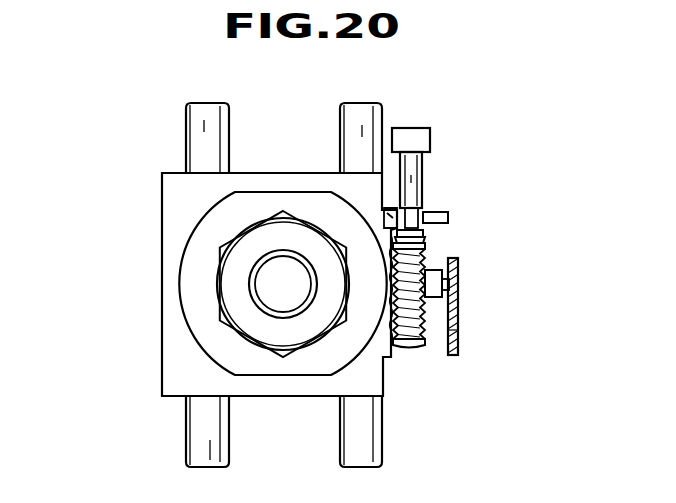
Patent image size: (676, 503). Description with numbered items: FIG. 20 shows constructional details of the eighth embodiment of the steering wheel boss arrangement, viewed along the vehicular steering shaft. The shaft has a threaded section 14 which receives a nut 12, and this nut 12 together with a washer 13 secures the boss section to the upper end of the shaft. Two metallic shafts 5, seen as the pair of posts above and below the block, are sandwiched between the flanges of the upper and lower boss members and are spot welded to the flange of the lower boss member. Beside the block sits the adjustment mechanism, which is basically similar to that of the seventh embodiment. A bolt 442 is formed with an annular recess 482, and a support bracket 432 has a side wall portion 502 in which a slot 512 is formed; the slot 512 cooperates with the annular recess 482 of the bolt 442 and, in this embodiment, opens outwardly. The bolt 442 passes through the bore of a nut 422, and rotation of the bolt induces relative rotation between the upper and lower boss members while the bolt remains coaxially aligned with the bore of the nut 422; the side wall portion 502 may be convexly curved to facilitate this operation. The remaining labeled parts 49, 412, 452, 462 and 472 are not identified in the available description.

The metallic shafts 5 is at (340, 138).
The nut 12 is at (221, 258).
The washer 13 is at (227, 233).
The threaded section 14 is at (263, 280).
The housing block 49 is at (173, 357).
The adjustment assembly 412 is at (465, 141).
The nut 422 is at (444, 299).
The support bracket 432 is at (458, 259).
The bolt 442 is at (412, 346).
The shaft 452 is at (460, 279).
The gear teeth 462 is at (458, 335).
The adjusting screw 472 is at (408, 127).
The annular recess 482 is at (430, 211).
The side wall portion 502 is at (426, 233).
The slot 512 is at (449, 216).